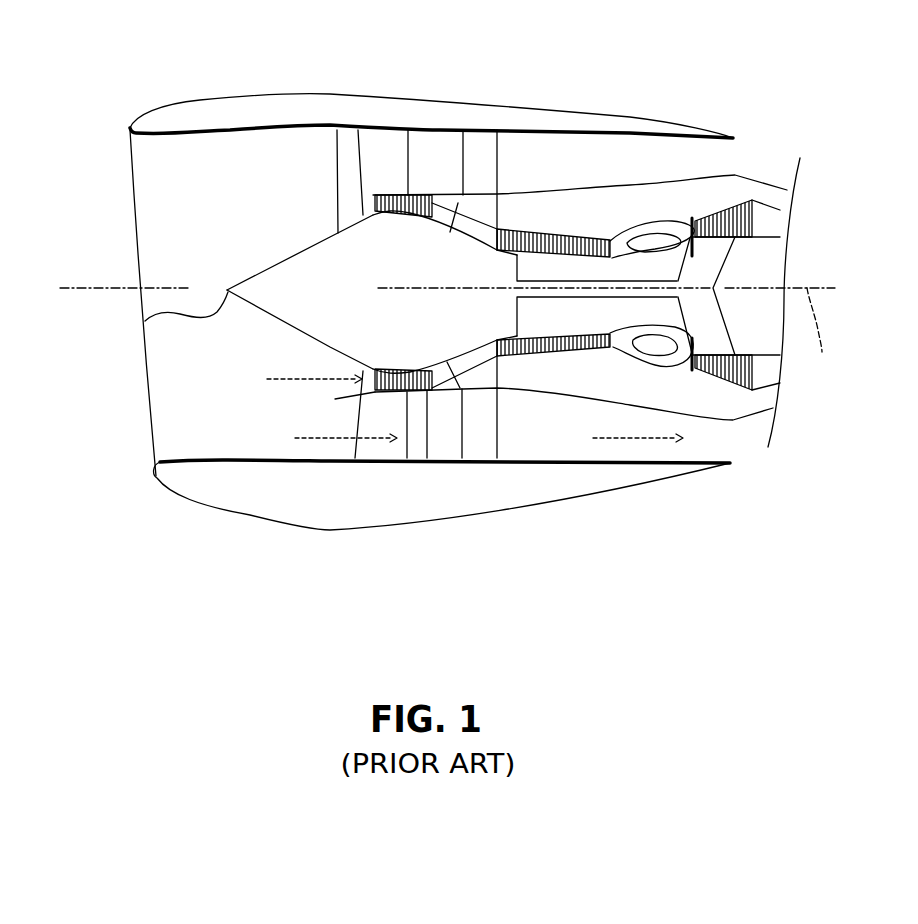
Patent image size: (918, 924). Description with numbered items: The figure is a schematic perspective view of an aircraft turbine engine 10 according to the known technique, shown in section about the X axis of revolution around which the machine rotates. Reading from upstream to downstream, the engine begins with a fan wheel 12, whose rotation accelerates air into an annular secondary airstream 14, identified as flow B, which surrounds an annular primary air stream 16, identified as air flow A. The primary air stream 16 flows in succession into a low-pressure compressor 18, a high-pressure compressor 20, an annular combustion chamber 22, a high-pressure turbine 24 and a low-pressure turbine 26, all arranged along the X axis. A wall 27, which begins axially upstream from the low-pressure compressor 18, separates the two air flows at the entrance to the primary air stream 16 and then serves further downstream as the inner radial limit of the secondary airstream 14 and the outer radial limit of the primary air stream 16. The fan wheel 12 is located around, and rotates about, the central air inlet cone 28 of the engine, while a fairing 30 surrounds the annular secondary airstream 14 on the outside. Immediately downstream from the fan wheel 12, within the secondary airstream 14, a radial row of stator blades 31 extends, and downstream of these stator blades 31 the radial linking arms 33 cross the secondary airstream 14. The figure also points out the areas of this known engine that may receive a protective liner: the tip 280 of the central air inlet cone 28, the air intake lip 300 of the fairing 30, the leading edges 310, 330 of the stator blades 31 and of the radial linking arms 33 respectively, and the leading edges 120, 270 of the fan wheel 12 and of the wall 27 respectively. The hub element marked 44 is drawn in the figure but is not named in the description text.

The aircraft turbine engine 10 is at (636, 98).
The fan wheel 12 is at (350, 155).
The annular secondary airstream 14 is at (517, 155).
The annular primary air stream 16 is at (476, 231).
The low-pressure compressor 18 is at (392, 193).
The high-pressure compressor 20 is at (547, 237).
The annular combustion chamber 22 is at (662, 220).
The high-pressure turbine 24 is at (693, 222).
The low-pressure turbine 26 is at (727, 203).
The wall 27 is at (430, 200).
The central air inlet cone 28 is at (262, 272).
The fairing 30 is at (211, 100).
The stator blades 31 is at (423, 140).
The radial linking arms 33 is at (483, 443).
The hub 44 is at (393, 217).
The leading edge of the fan wheel 120 is at (340, 203).
The leading edge of the wall 270 is at (335, 397).
The tip of the central air intake cone 280 is at (147, 322).
The air intake lip 300 is at (130, 133).
The leading edge of the stator blades 310 is at (407, 448).
The leading edge of the radial arms 330 is at (462, 447).